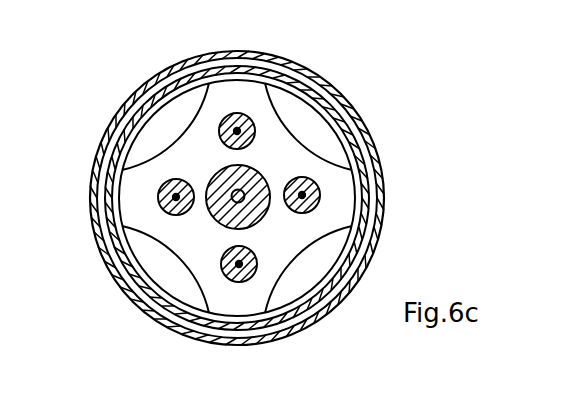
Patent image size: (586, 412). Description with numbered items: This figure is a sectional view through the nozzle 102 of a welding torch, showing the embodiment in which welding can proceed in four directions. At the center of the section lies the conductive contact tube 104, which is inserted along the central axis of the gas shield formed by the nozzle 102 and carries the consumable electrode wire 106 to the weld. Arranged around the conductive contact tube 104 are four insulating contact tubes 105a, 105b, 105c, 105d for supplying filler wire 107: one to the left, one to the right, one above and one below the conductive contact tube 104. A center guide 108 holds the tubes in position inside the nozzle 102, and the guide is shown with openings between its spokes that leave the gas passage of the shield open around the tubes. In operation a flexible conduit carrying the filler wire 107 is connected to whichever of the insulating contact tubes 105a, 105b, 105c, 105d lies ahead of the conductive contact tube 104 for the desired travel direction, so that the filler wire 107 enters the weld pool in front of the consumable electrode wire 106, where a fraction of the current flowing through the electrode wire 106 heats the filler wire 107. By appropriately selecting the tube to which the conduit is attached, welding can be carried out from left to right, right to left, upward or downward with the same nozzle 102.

The nozzle 102 is at (338, 94).
The conductive contact tube 104 is at (240, 193).
The insulating contact tube 105a is at (160, 196).
The insulating contact tube 105b is at (320, 193).
The insulating contact tube 105c is at (238, 112).
The insulating contact tube 105d is at (238, 283).
The consumable electrode wire 106 is at (327, 113).
The filler wire 107 is at (247, 177).
The center guide 108 is at (202, 158).